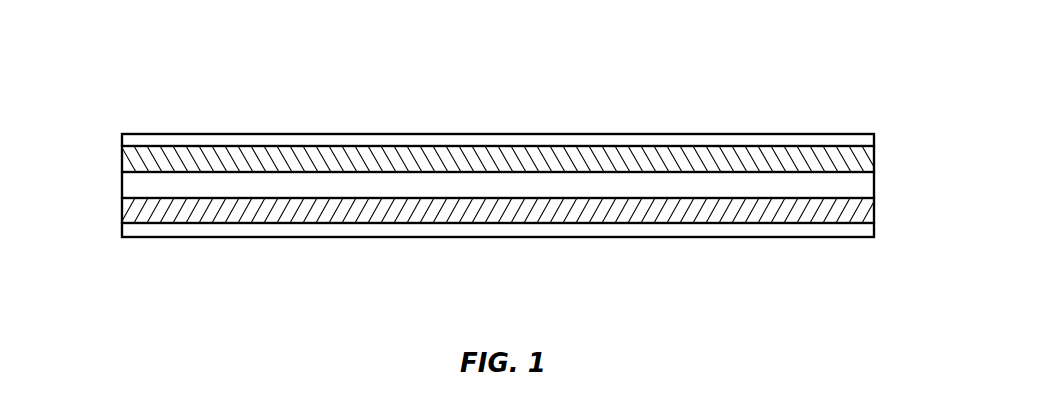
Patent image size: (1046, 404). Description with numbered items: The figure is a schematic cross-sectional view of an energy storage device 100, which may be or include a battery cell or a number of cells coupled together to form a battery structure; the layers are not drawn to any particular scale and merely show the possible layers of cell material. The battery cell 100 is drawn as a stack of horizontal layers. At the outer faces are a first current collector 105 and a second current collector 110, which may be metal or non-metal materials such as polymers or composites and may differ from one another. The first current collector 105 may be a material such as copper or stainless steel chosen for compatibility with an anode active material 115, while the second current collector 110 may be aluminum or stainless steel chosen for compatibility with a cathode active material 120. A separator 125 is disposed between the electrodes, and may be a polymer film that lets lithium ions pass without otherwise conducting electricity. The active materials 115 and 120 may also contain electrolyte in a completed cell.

The energy storage device 100 is at (257, 78).
The first current collector 105 is at (331, 238).
The second current collector 110 is at (723, 134).
The anode active material 115 is at (122, 205).
The cathode active material 120 is at (877, 158).
The separator 125 is at (877, 192).